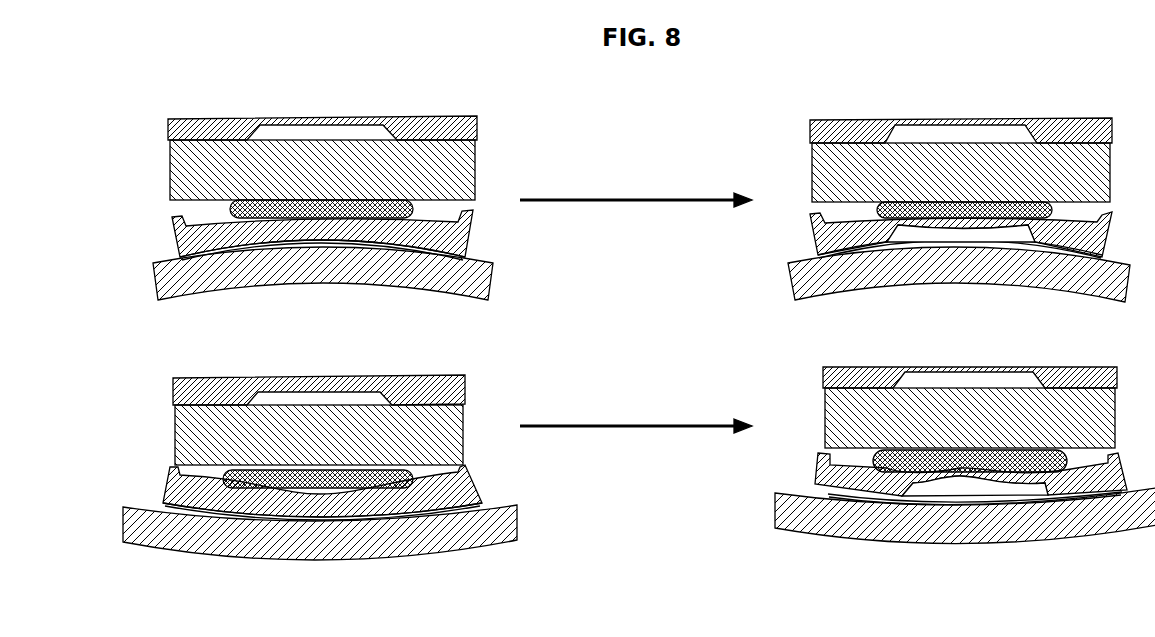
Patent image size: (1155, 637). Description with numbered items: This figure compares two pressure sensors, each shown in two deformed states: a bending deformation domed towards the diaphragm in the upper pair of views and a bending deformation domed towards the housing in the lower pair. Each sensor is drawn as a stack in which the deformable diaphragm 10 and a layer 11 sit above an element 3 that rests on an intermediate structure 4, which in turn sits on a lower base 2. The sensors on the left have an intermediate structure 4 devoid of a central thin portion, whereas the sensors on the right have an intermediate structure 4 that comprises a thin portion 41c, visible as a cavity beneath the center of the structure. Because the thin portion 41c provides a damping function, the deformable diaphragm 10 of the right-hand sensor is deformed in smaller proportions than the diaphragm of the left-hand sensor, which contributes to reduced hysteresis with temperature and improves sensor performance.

The lower substrate 2 is at (150, 283).
The spacer 3 is at (421, 210).
The intermediate structure 4 is at (168, 240).
The deformable diaphragm 10 is at (167, 131).
The intermediate layer 11 is at (167, 168).
The thin portion 41c is at (960, 236).